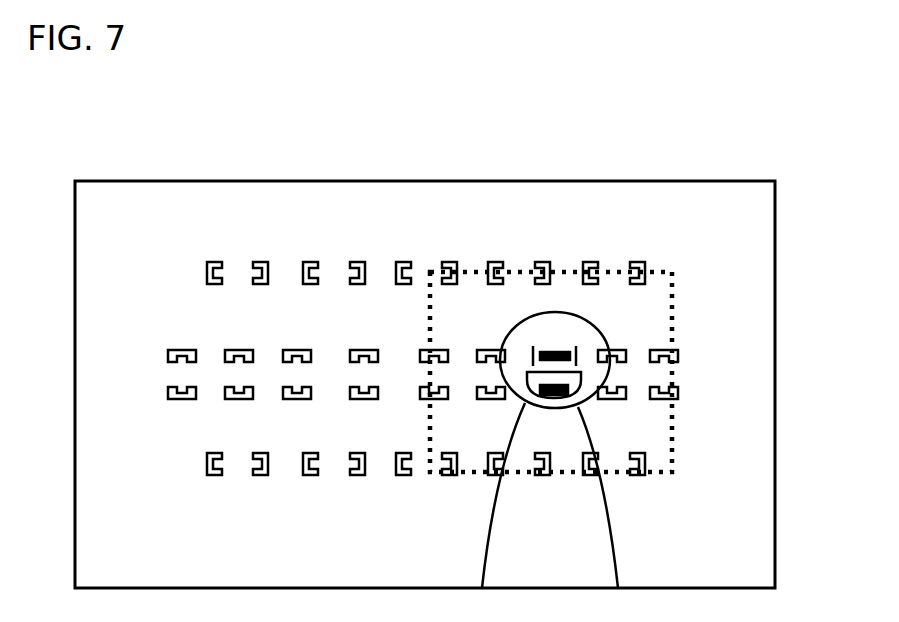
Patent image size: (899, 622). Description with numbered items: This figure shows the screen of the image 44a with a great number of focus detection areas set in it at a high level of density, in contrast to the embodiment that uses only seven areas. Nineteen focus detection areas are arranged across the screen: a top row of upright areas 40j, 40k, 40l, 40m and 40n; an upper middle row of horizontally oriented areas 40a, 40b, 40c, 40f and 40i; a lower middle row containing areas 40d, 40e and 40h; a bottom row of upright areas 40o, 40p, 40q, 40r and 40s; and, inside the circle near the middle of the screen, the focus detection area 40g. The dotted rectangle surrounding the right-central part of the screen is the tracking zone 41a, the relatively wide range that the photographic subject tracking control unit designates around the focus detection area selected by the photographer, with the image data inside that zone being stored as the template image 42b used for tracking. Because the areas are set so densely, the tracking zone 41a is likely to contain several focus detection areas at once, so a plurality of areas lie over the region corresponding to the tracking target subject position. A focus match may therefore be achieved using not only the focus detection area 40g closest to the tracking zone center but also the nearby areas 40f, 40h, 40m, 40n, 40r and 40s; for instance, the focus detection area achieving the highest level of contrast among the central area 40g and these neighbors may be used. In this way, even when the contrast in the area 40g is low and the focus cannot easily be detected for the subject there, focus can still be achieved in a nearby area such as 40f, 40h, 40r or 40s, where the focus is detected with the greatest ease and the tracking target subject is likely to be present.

The image 44a is at (253, 181).
The tracking zone 41a is at (653, 286).
The display region 42b is at (672, 290).
The focus detection area 40a is at (172, 350).
The focus detection area 40b is at (237, 350).
The focus detection area 40c is at (322, 322).
The focus detection area 40d is at (350, 389).
The focus detection area 40e is at (420, 393).
The focus detection area 40f is at (485, 350).
The focus detection area 40g is at (563, 405).
The focus detection area 40h is at (600, 395).
The focus detection area 40i is at (664, 368).
The focus detection area 40j is at (212, 262).
The focus detection area 40k is at (310, 262).
The focus detection area 40l is at (407, 262).
The focus detection area 40m is at (497, 262).
The focus detection area 40n is at (597, 262).
The focus detection area 40o is at (215, 477).
The focus detection area 40p is at (310, 477).
The focus detection area 40q is at (418, 477).
The focus detection area 40r is at (517, 477).
The focus detection area 40s is at (620, 477).